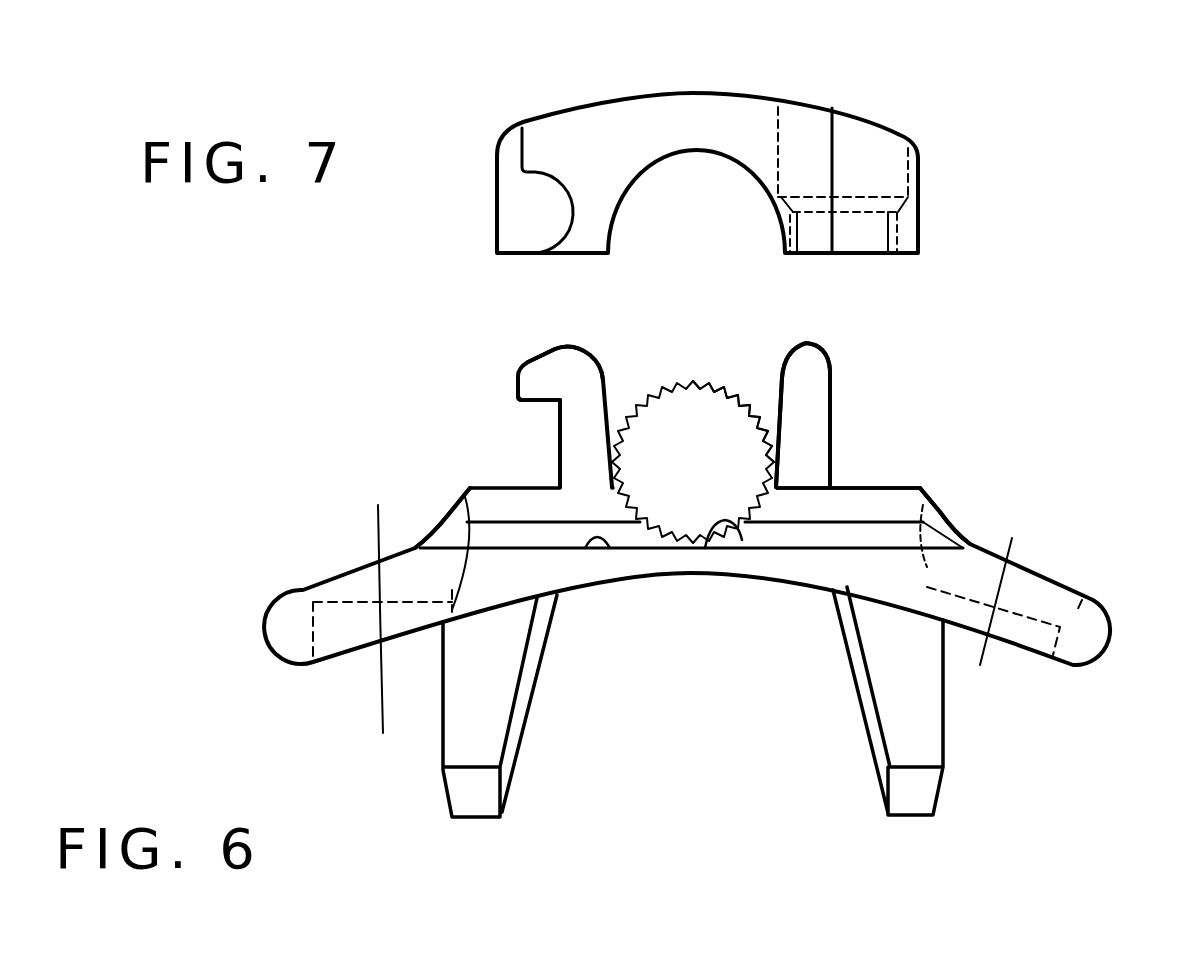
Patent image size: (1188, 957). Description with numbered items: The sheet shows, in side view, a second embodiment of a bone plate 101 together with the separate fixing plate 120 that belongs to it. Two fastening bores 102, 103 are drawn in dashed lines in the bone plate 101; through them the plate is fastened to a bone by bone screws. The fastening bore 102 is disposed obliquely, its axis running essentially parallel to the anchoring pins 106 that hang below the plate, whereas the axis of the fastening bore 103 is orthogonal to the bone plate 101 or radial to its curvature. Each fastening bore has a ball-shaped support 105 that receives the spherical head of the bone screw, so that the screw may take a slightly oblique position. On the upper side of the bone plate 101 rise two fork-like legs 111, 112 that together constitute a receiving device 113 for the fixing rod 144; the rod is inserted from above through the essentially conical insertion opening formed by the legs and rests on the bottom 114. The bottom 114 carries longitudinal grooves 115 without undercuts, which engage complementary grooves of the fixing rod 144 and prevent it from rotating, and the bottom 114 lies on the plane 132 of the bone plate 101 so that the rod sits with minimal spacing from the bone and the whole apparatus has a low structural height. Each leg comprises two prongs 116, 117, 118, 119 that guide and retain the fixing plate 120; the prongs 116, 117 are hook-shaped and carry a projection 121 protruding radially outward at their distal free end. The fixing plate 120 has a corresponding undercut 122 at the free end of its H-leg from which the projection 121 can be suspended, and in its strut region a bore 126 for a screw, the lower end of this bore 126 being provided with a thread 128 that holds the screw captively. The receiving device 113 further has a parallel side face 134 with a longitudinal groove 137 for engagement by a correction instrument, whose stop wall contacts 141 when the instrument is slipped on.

In FIG. 6, the bone plate 101 is at (851, 567).
In FIG. 6, the fastening bore 102 is at (348, 577).
In FIG. 6, the fastening bore 103 is at (1033, 595).
In FIG. 6, the ball-shaped support 105 is at (460, 572).
In FIG. 6, the anchoring pins 106 is at (467, 800).
In FIG. 6, the leg 111 is at (548, 446).
In FIG. 6, the leg 112 is at (843, 445).
In FIG. 6, the receiving device 113 is at (850, 350).
In FIG. 6, the bottom 114 is at (679, 534).
In FIG. 6, the longitudinal grooves 115 is at (703, 547).
In FIG. 6, the prong 116 is at (515, 336).
In FIG. 6, the prong 117 is at (553, 375).
In FIG. 6, the prong 118 is at (893, 414).
In FIG. 6, the prong 119 is at (812, 388).
In FIG. 7, the fixing plate 120 is at (821, 101).
In FIG. 6, the projection 121 is at (532, 388).
In FIG. 7, the undercut 122 is at (531, 163).
In FIG. 7, the bore 126 is at (855, 173).
In FIG. 7, the thread 128 is at (893, 225).
In FIG. 6, the plane 132 is at (588, 548).
In FIG. 6, the side face 134 is at (890, 512).
In FIG. 6, the longitudinal groove 137 is at (937, 546).
In FIG. 6, the contact 141 is at (450, 512).
In FIG. 6, the fixing rod 144 is at (747, 472).